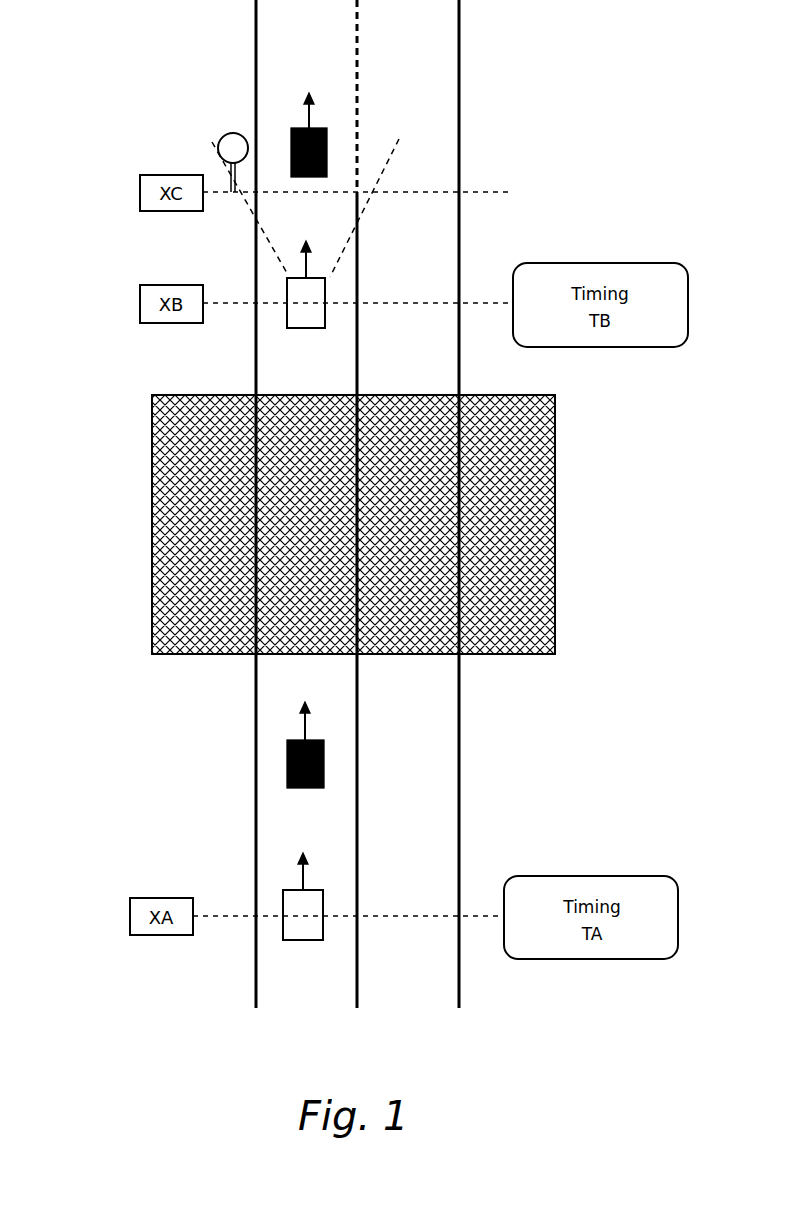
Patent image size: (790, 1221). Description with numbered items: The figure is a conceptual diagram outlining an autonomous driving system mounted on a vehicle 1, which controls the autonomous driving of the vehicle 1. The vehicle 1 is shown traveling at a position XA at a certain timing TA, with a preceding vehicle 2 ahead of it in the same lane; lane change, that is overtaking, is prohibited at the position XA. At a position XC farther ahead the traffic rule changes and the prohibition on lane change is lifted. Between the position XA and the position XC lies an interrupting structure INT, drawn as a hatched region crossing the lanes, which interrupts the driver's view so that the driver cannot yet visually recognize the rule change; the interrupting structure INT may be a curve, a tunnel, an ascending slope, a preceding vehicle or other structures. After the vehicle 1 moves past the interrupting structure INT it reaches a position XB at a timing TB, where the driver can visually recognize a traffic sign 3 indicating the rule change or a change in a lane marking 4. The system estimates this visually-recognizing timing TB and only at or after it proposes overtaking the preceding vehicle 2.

The vehicle 1 is at (325, 307).
The preceding vehicle 2 is at (293, 127).
The traffic sign 3 is at (217, 153).
The lane marking 4 is at (360, 143).
The interrupting structure INT is at (152, 515).